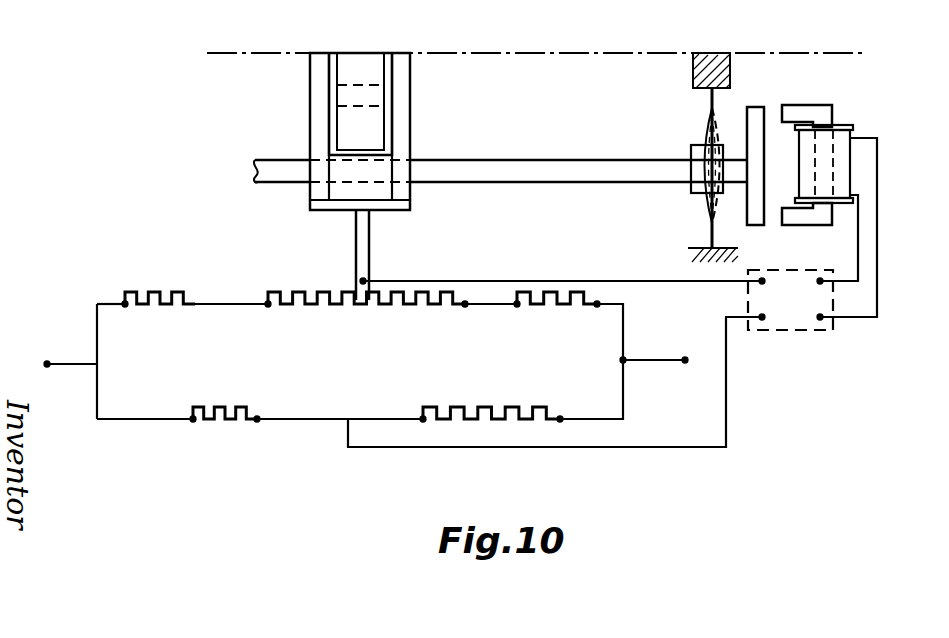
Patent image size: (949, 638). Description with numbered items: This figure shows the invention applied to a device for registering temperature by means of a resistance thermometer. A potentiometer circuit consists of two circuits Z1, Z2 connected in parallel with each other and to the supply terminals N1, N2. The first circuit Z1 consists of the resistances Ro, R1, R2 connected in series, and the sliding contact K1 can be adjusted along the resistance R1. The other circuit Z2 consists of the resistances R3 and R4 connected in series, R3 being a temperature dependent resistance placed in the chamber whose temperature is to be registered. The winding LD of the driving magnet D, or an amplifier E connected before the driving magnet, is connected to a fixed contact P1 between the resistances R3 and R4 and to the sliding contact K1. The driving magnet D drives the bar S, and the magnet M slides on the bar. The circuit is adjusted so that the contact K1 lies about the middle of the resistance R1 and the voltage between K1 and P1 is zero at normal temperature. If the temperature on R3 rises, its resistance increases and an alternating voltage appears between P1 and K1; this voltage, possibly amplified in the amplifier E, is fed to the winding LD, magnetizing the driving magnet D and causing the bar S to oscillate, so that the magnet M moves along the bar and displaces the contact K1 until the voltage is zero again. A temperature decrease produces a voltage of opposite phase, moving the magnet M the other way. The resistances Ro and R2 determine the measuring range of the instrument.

The magnet M is at (370, 100).
The bar S is at (578, 172).
The armature plate A is at (755, 215).
The driving magnet D is at (810, 112).
The winding of the driving magnet LD is at (840, 167).
The amplifier E is at (612, 292).
The sliding contact K1 is at (357, 244).
The supply terminal N1 is at (50, 361).
The supply terminal N2 is at (658, 347).
The circuit Z1 is at (112, 303).
The circuit Z2 is at (138, 420).
The fixed contact P1 is at (349, 416).
The resistance Ro is at (196, 286).
The resistance R1 is at (391, 314).
The resistance R2 is at (568, 355).
The temperature dependent resistance R3 is at (270, 402).
The resistance R4 is at (491, 396).